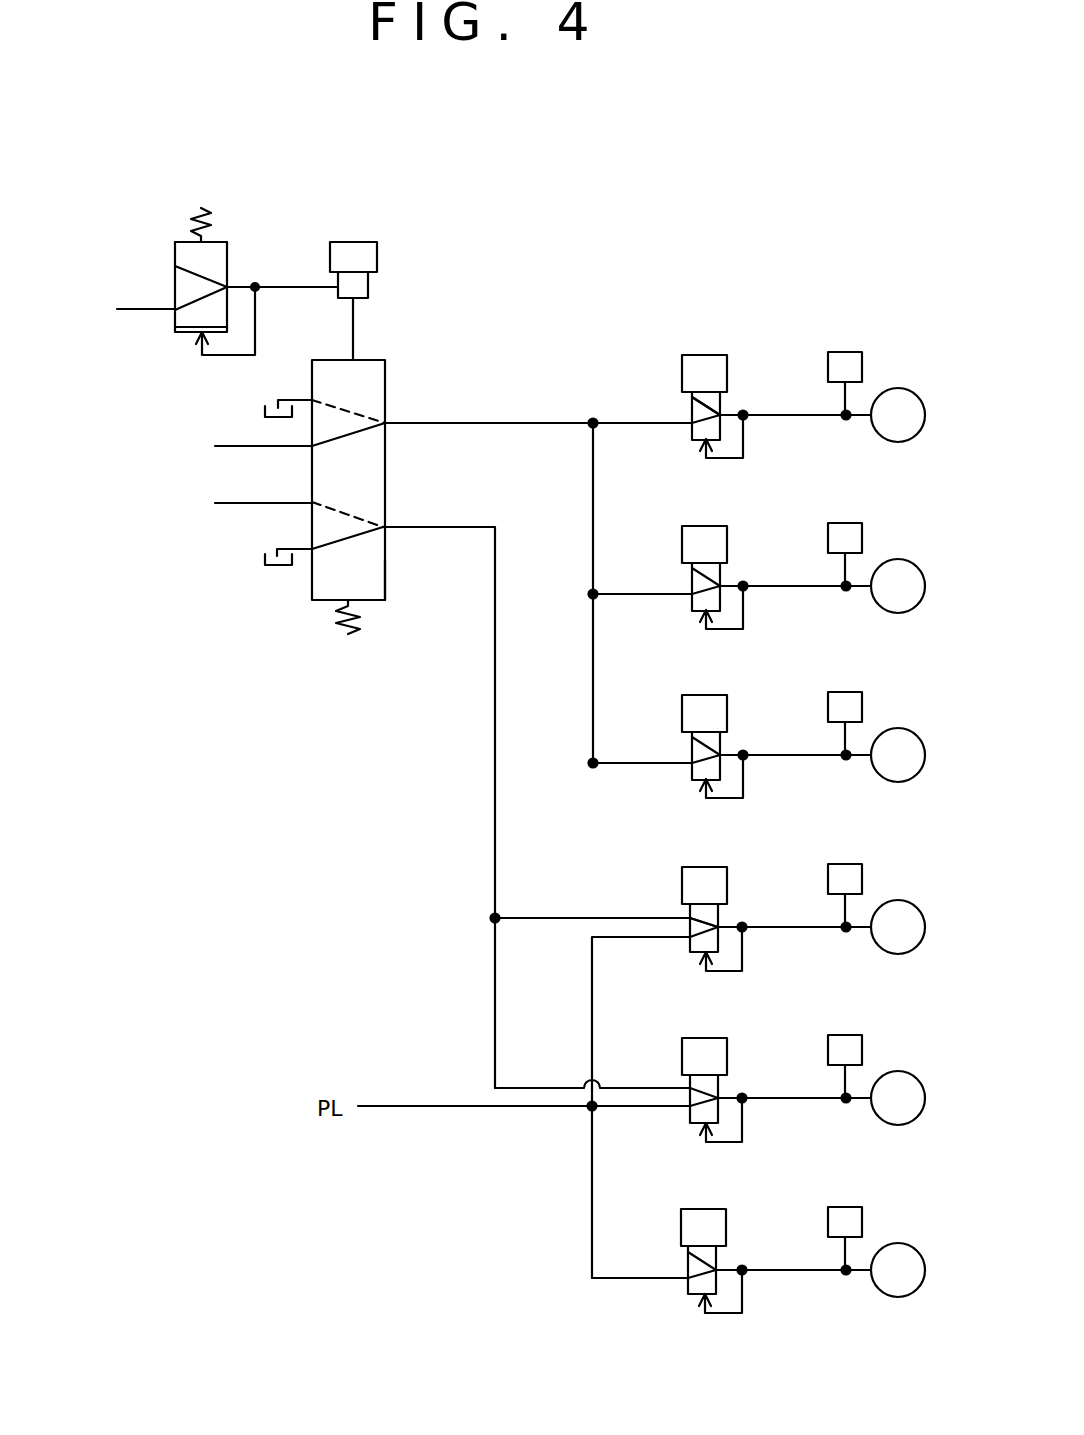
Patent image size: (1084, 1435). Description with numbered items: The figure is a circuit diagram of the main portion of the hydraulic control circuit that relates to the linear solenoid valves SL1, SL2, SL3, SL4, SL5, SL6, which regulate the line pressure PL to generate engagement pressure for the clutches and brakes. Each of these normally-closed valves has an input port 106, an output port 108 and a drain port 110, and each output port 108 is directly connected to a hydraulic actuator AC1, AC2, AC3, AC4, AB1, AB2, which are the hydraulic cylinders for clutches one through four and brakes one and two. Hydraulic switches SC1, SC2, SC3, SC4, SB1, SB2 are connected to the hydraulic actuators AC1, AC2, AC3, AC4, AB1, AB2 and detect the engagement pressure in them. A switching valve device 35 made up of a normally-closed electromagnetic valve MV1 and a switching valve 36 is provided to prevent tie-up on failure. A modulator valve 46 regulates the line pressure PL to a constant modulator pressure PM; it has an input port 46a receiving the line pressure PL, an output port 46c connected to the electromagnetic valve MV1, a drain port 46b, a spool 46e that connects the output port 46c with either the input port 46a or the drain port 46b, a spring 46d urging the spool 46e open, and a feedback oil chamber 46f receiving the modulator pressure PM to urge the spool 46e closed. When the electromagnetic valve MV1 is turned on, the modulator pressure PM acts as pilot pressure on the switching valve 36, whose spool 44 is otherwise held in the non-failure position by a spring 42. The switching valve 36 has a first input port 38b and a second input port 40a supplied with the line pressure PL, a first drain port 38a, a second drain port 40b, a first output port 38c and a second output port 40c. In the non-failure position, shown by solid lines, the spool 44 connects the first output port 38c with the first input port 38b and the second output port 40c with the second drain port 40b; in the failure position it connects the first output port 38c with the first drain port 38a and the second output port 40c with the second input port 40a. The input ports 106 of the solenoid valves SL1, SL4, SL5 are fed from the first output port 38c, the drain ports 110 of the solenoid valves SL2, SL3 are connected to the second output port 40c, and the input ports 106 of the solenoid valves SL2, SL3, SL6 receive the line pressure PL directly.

The switching valve device 35 is at (462, 203).
The switching valve 36 is at (351, 695).
The first drain port 38a is at (312, 400).
The first input port 38b is at (310, 443).
The first output port 38c is at (385, 422).
The second input port 40a is at (310, 503).
The second drain port 40b is at (310, 551).
The second output port 40c is at (383, 527).
The spring 42 is at (342, 636).
The spool 44 is at (370, 575).
The modulator valve 46 is at (203, 268).
The input port 46a is at (177, 330).
The drain port 46b is at (176, 262).
The output port 46c is at (227, 288).
The spring 46d is at (195, 212).
The spool 46e is at (183, 248).
The feedback oil chamber 46f is at (188, 335).
The input port 106 is at (692, 423).
The output port 108 is at (722, 414).
The drain port 110 is at (716, 414).
The electromagnetic valve MV1 is at (355, 248).
The linear solenoid valve SL1 is at (759, 400).
The linear solenoid valve SL2 is at (776, 912).
The linear solenoid valve SL3 is at (776, 1083).
The linear solenoid valve SL4 is at (759, 571).
The linear solenoid valve SL5 is at (759, 740).
The linear solenoid valve SL6 is at (758, 1254).
The hydraulic switch SC1 is at (847, 358).
The hydraulic switch SC2 is at (847, 870).
The hydraulic switch SC3 is at (847, 1041).
The hydraulic switch SC4 is at (847, 529).
The hydraulic switch SB1 is at (847, 698).
The hydraulic switch SB2 is at (847, 1213).
The hydraulic actuator AC1 is at (896, 390).
The hydraulic actuator AC2 is at (896, 902).
The hydraulic actuator AC3 is at (896, 1073).
The hydraulic actuator AC4 is at (896, 561).
The hydraulic actuator AB1 is at (896, 730).
The hydraulic actuator AB2 is at (896, 1245).